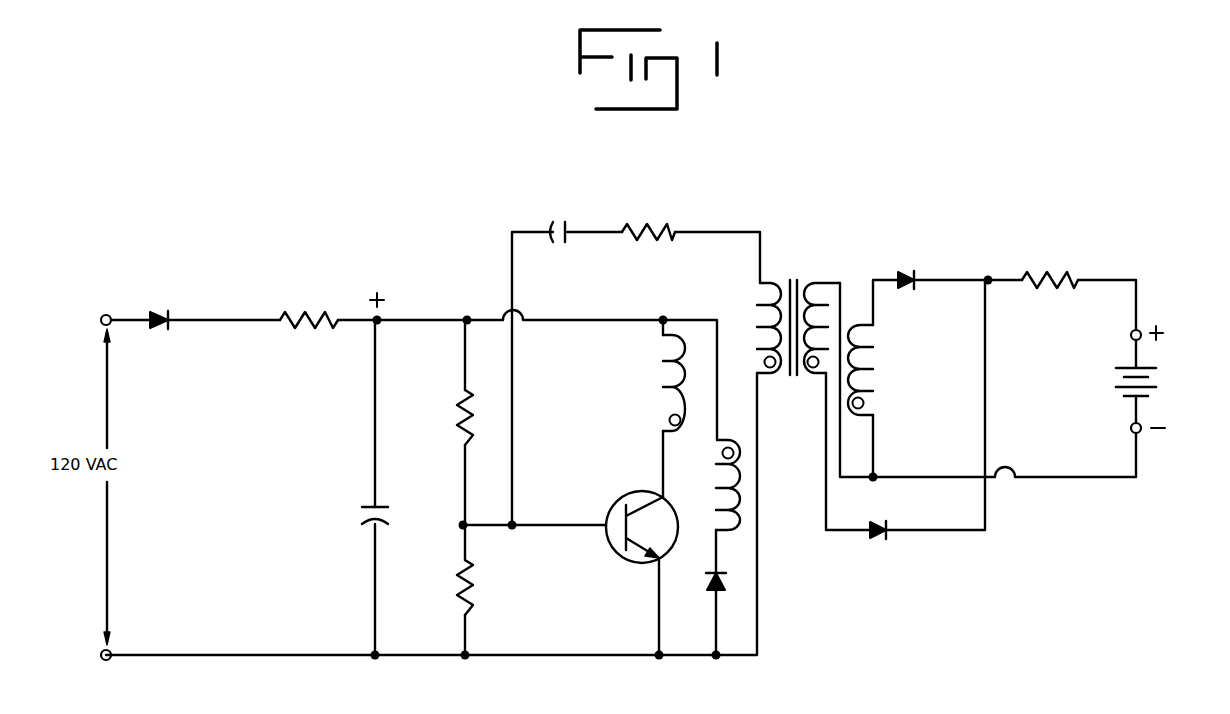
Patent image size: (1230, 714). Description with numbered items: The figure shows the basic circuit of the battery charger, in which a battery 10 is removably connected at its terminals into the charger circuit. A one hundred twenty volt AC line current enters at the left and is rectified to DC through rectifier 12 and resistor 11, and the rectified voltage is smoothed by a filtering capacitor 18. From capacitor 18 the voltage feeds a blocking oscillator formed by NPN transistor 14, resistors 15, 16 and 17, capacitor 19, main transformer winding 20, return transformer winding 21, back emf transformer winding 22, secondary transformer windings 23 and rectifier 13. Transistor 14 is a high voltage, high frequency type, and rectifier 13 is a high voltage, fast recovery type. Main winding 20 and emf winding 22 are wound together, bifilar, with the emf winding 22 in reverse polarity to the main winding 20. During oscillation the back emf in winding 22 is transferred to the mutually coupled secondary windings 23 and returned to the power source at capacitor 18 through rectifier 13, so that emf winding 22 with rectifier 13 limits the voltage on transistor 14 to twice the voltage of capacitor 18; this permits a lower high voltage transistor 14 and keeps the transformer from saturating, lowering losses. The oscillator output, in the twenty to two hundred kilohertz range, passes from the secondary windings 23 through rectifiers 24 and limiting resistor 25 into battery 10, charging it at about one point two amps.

The battery 10 is at (1158, 376).
The resistor 11 is at (287, 300).
The rectifier 12 is at (160, 300).
The rectifier 13 is at (700, 585).
The NPN transistor 14 is at (622, 494).
The resistor 15 is at (462, 425).
The resistor 16 is at (460, 598).
The resistor 17 is at (658, 222).
The filtering capacitor 18 is at (369, 528).
The capacitor 19 is at (570, 222).
The main transformer winding 20 is at (660, 380).
The return transformer winding 21 is at (758, 292).
The back emf transformer winding 22 is at (706, 485).
The secondary transformer windings 23 is at (826, 280).
The rectifiers 24 is at (902, 272).
The limiting resistor 25 is at (1062, 270).